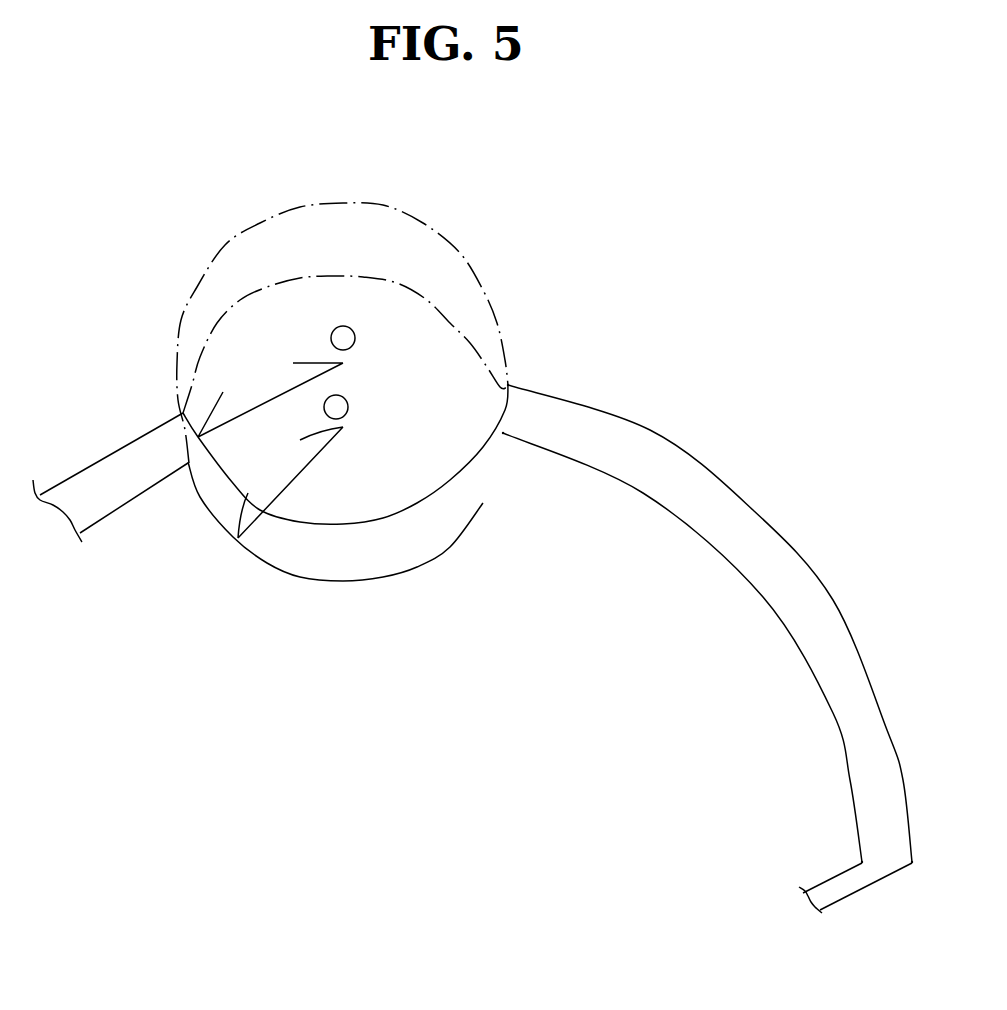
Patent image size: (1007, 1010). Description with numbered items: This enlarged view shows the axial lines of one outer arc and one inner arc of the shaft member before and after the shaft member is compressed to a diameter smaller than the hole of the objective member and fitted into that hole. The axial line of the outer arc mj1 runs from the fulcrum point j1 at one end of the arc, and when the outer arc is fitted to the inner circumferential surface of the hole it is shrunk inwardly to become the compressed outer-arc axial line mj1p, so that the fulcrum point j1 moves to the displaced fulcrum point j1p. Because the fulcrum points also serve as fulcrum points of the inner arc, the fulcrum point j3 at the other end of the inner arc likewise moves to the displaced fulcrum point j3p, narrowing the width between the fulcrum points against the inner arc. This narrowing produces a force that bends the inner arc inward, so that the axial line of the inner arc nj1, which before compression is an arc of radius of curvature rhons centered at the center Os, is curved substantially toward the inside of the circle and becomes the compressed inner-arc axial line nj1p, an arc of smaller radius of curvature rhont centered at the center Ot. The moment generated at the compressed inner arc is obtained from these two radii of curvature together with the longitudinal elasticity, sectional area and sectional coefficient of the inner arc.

The fulcrum point j1 is at (508, 385).
The fulcrum point j1p is at (862, 862).
The fulcrum point j3 is at (183, 413).
The fulcrum point j3p is at (188, 463).
The axial line of outer arc mj1 is at (753, 510).
The axial line of compressed outer arc mj1p is at (763, 597).
The axial line of inner arc nj1 is at (428, 500).
The axial line of compressed inner arc nj1p is at (377, 578).
The center of curvature of inner arc before compression Os is at (351, 341).
The center of curvature of inner arc after compression Ot is at (344, 410).
The radius of curvature of inner arc before compression rhons is at (270, 397).
The radius of curvature of inner arc after compression rhont is at (290, 482).